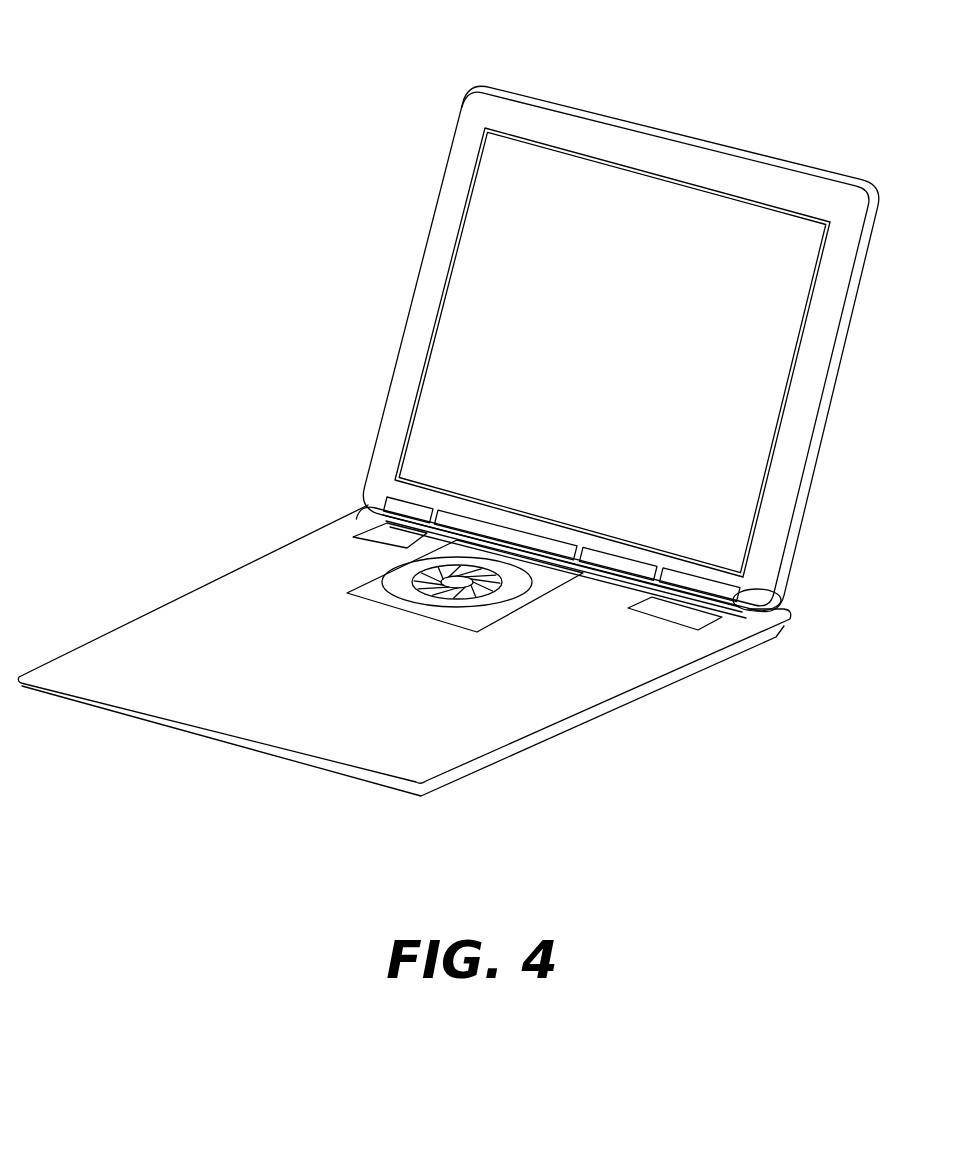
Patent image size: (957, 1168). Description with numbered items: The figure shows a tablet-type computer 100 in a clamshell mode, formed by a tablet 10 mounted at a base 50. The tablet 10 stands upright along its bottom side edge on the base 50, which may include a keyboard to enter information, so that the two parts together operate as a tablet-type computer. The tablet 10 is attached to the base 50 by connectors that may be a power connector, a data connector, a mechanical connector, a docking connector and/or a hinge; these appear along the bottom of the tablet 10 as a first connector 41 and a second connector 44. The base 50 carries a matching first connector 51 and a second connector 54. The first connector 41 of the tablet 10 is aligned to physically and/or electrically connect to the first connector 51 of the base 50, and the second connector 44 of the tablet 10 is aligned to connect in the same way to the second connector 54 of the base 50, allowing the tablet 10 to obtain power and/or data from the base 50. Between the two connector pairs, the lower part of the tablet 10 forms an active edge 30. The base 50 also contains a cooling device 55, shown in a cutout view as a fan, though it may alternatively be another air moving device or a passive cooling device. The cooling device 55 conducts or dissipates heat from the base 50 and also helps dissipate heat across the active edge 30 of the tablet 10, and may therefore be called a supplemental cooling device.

The notebook computer 100 is at (284, 311).
The tablet 10 is at (646, 124).
The active edge 30 is at (578, 540).
The first connector 41 is at (372, 500).
The second connector 44 is at (752, 590).
The base 50 is at (600, 692).
The first connector 51 is at (364, 532).
The second connector 54 is at (740, 622).
The cooling device 55 is at (395, 578).